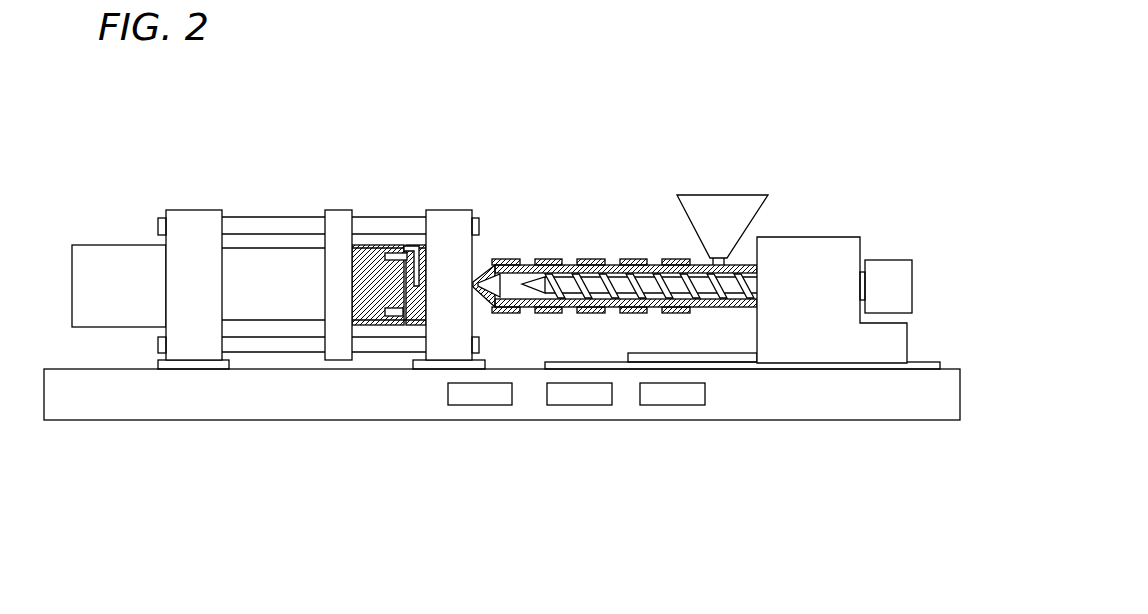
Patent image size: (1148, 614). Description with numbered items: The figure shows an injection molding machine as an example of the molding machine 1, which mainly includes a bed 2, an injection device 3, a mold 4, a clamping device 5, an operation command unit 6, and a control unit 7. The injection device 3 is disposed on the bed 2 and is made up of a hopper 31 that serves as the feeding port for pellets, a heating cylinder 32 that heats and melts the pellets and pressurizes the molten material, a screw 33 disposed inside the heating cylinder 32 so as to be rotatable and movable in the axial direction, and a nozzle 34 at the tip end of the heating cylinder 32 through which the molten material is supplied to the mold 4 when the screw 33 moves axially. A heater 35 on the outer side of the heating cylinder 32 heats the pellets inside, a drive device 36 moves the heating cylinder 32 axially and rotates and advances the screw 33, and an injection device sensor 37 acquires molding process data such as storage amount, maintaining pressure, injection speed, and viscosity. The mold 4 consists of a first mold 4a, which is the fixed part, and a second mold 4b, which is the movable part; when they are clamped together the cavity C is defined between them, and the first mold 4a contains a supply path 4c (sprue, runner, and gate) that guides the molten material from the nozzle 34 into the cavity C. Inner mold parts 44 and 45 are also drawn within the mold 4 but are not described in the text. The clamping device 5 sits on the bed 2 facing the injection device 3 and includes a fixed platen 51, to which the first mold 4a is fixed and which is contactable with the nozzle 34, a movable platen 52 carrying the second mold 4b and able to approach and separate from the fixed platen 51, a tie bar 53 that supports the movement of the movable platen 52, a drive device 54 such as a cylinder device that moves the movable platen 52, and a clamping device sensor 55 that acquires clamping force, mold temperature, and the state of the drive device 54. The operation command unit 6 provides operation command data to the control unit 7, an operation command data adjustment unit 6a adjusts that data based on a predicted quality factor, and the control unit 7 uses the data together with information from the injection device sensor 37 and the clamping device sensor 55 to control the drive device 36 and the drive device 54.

The molding machine 1 is at (818, 122).
The bed 2 is at (138, 421).
The injection device 3 is at (706, 251).
The mold 4 is at (388, 355).
The first mold 4a is at (398, 327).
The second mold 4b is at (365, 327).
The supply path 4c is at (415, 287).
The ejector 44 is at (407, 325).
The cavity block 45 is at (388, 250).
The cavity C is at (397, 247).
The clamping device 5 is at (271, 355).
The fixed platen 51 is at (447, 210).
The movable platen 52 is at (326, 211).
The tie bar 53 is at (260, 217).
The drive device 54 is at (132, 243).
The clamping device sensor 55 is at (102, 270).
The operation command unit 6 is at (490, 406).
The operation command data adjustment unit 6a is at (585, 406).
The control unit 7 is at (675, 406).
The hopper 31 is at (719, 195).
The heating cylinder 32 is at (650, 267).
The screw 33 is at (593, 282).
The nozzle 34 is at (485, 272).
The heater 35 is at (541, 260).
The drive device 36 is at (828, 237).
The injection device sensor 37 is at (822, 272).